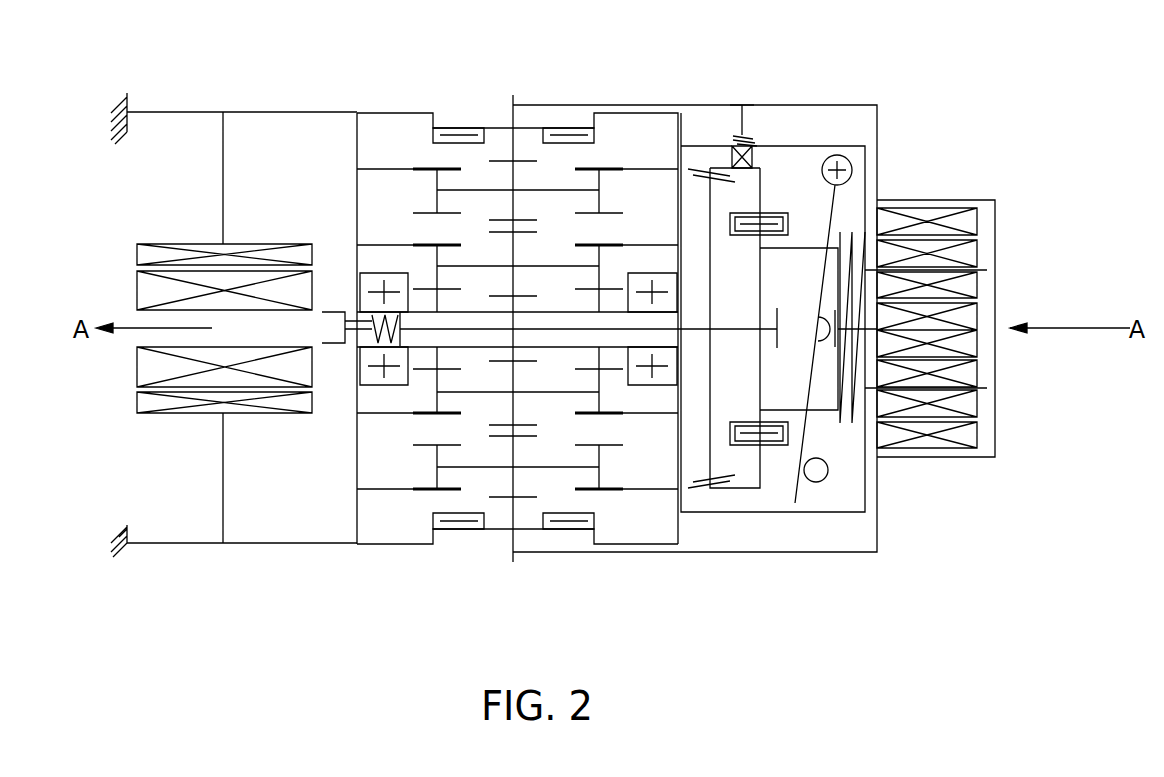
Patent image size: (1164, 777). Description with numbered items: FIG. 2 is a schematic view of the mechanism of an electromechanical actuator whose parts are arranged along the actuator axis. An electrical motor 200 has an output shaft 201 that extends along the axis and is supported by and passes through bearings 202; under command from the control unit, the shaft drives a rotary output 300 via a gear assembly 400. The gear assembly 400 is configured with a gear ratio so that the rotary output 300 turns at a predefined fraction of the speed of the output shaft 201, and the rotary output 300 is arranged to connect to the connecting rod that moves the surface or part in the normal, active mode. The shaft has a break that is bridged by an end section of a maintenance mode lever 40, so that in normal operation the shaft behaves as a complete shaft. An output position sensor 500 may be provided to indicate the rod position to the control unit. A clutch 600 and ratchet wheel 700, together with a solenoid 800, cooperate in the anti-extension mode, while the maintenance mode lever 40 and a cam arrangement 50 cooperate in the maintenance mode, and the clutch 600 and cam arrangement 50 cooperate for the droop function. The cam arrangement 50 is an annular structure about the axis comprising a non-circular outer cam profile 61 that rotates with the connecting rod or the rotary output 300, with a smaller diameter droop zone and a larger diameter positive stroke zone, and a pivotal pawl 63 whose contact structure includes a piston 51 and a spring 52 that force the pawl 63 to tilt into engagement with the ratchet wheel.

The electrical motor 200 is at (127, 295).
The output shaft 201 is at (430, 312).
The bearings 202 is at (368, 373).
The rotary output 300 is at (517, 97).
The gear assembly 400 is at (398, 563).
The maintenance mode lever 40 is at (723, 328).
The cam arrangement 50 is at (755, 145).
The piston 51 is at (742, 122).
The spring 52 is at (737, 138).
The outer cam profile 61 is at (733, 105).
The pawl 63 is at (690, 168).
The clutch 600 is at (762, 393).
The ratchet wheel 700 is at (760, 213).
The output position sensor 500 is at (968, 238).
The solenoid 800 is at (972, 290).